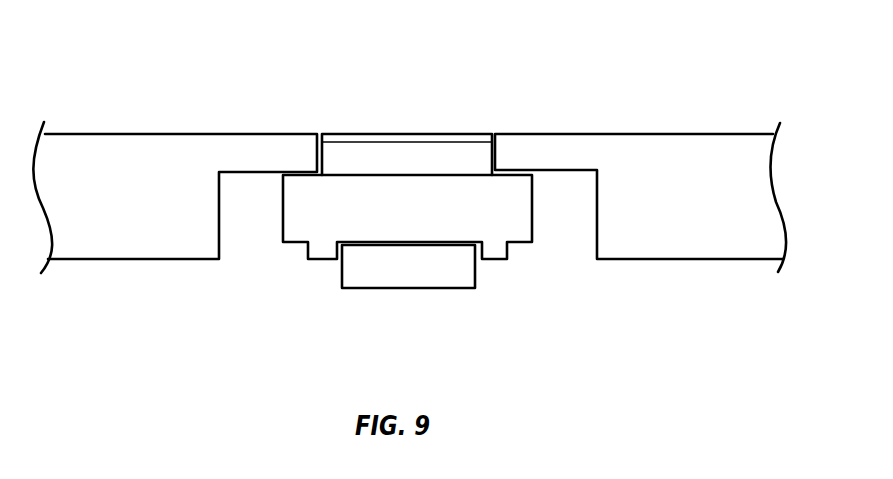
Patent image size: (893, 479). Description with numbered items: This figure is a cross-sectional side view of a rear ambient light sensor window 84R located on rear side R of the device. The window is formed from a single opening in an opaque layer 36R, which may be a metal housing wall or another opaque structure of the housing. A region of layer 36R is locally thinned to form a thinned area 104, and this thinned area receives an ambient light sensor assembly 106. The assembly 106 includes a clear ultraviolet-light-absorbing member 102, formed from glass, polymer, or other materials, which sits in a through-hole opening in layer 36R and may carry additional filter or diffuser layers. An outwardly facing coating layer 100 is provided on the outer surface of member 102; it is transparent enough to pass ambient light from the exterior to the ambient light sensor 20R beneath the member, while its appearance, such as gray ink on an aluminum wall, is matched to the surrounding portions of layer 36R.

The rear side R is at (152, 75).
The ambient light sensor assembly 106 is at (238, 277).
The opaque layer 36R is at (706, 147).
The coating layer 100 is at (482, 137).
The rear ambient light sensor window 84R is at (493, 117).
The ultraviolet-light-absorbing member 102 is at (532, 210).
The ambient light sensor 20R is at (477, 278).
The thinned area 104 is at (598, 318).